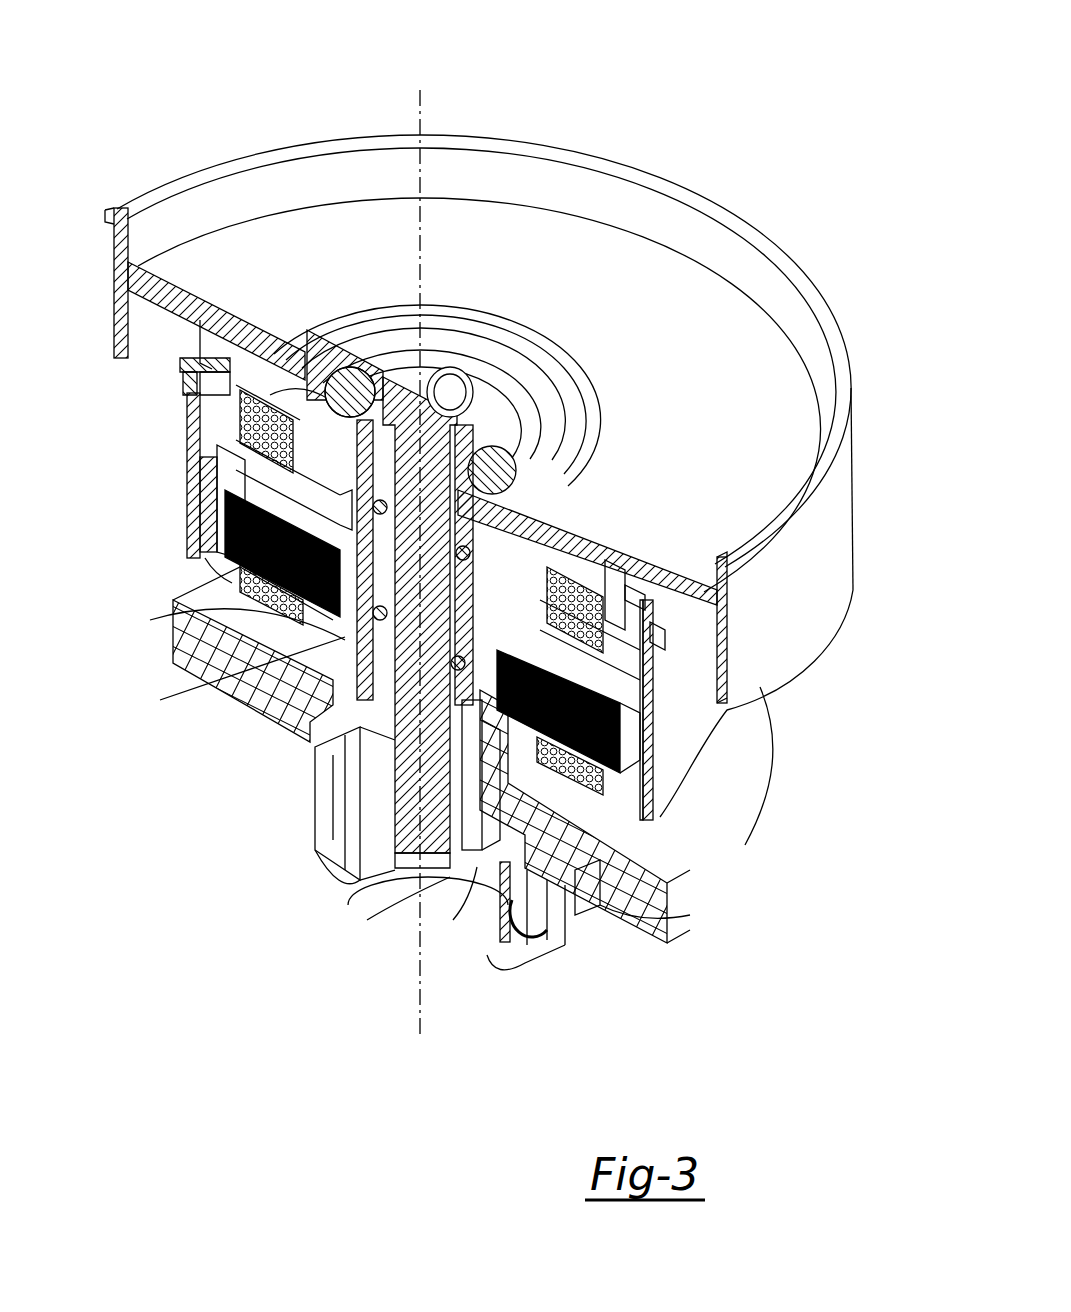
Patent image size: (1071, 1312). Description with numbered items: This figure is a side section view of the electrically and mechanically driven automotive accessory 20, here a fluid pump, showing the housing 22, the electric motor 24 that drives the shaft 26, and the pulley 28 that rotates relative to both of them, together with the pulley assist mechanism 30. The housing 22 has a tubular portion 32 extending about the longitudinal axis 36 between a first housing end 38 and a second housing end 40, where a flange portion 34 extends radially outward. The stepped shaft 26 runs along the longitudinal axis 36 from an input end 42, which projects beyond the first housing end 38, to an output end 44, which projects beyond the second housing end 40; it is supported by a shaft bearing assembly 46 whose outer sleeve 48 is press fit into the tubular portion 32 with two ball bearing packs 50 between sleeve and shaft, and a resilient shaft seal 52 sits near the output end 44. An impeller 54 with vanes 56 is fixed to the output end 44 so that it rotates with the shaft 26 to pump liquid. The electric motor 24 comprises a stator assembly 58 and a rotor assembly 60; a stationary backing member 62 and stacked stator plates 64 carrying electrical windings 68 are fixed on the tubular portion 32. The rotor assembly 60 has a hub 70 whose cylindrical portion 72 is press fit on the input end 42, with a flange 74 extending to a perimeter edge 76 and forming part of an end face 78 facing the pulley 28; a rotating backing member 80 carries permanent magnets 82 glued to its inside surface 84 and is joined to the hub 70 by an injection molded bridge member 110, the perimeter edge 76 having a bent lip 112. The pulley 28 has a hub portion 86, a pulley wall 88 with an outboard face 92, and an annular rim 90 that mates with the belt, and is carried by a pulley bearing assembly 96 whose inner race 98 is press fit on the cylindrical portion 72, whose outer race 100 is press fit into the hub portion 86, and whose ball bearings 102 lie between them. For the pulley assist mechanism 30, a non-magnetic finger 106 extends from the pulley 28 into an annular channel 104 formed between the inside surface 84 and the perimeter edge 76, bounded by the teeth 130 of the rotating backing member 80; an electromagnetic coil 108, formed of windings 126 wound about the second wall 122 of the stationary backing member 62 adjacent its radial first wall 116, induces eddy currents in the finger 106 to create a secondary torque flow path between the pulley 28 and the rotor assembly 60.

The electrically and mechanically driven automotive accessory 20 is at (188, 58).
The housing 22 is at (745, 832).
The electric motor 24 is at (178, 505).
The shaft 26 is at (397, 527).
The pulley 28 is at (683, 183).
The pulley assist mechanism 30 is at (168, 378).
The tubular portion 32 is at (488, 700).
The flange portion 34 is at (650, 917).
The longitudinal axis 36 is at (432, 103).
The first housing end 38 is at (490, 560).
The second housing end 40 is at (243, 709).
The input end 42 is at (441, 387).
The output end 44 is at (405, 855).
The shaft bearing assembly 46 is at (353, 645).
The outer sleeve 48 is at (323, 637).
The ball bearing packs 50 is at (375, 617).
The shaft seal 52 is at (480, 870).
The impeller 54 is at (540, 957).
The vanes 56 is at (360, 832).
The stator assembly 58 is at (614, 803).
The rotor assembly 60 is at (683, 702).
The stationary backing member 62 is at (198, 434).
The stator plates 64 is at (173, 617).
The electrical windings 68 is at (594, 847).
The hub 70 is at (279, 385).
The cylindrical portion 72 is at (373, 377).
The flange 74 is at (247, 413).
The perimeter edge 76 is at (645, 583).
The end face 78 is at (655, 578).
The rotating backing member 80 is at (680, 727).
The permanent magnets 82 is at (640, 770).
The inside surface 84 is at (205, 560).
The hub portion 86 is at (572, 407).
The pulley wall 88 is at (165, 295).
The annular rim 90 is at (123, 232).
The outboard face 92 is at (586, 237).
The pulley bearing assembly 96 is at (520, 478).
The inner race 98 is at (480, 387).
The outer race 100 is at (403, 330).
The ball bearings 102 is at (350, 380).
The annular channel 104 is at (200, 381).
The finger 106 is at (210, 363).
The electromagnetic coil 108 is at (205, 462).
The bridge member 110 is at (640, 640).
The bent lip 112 is at (657, 620).
The first wall 116 is at (617, 566).
The second wall 122 is at (573, 645).
The windings 126 is at (250, 388).
The teeth 130 is at (665, 630).